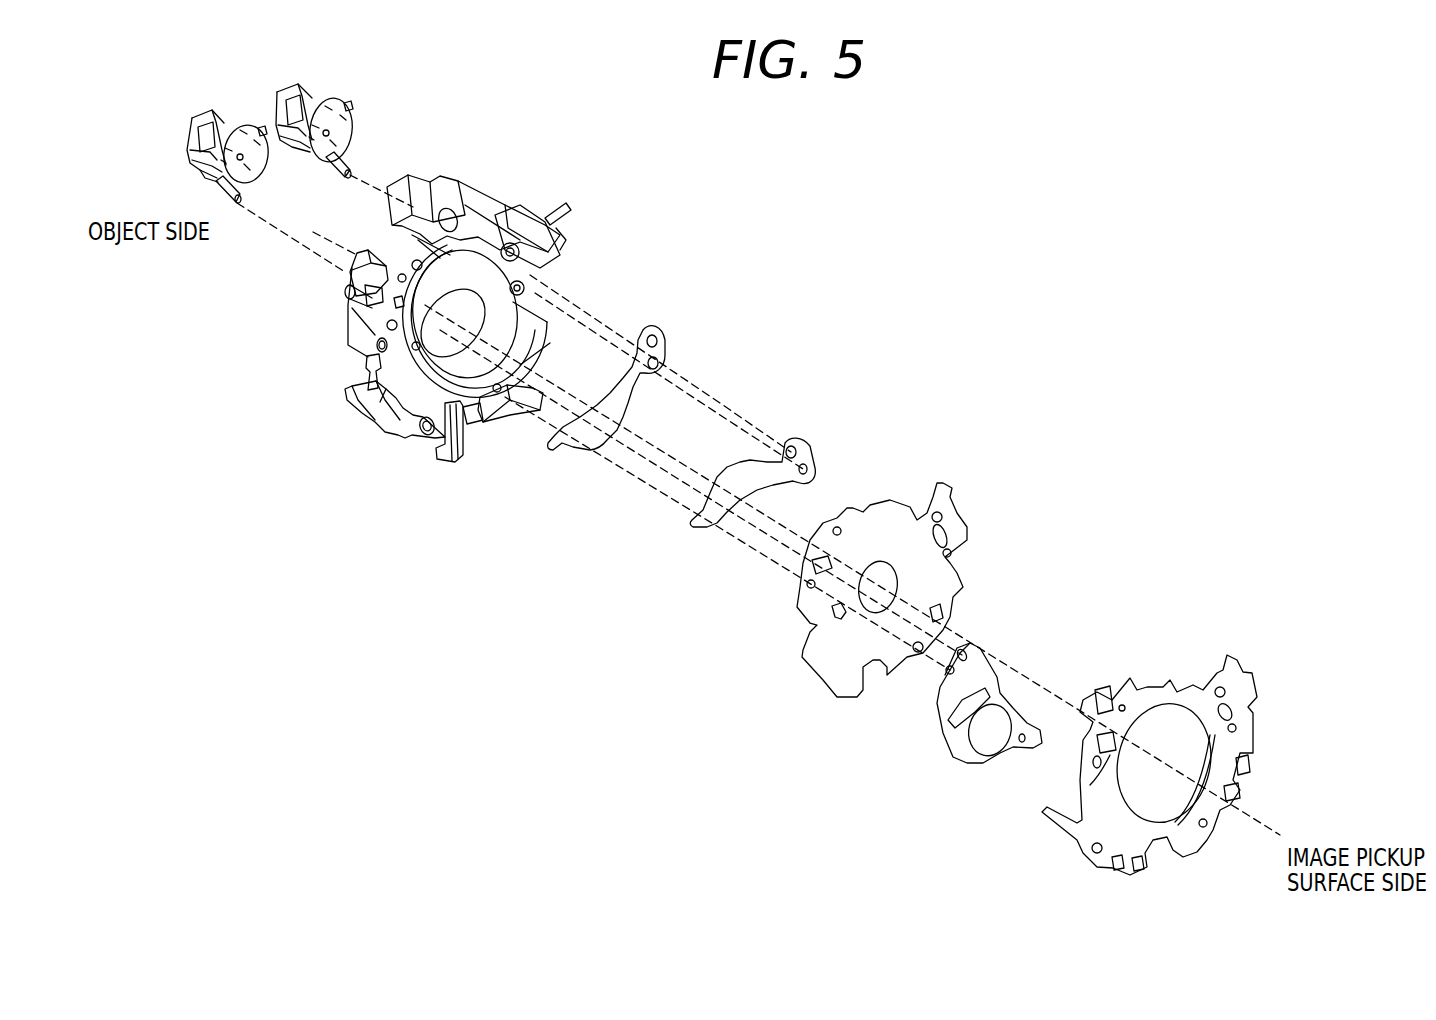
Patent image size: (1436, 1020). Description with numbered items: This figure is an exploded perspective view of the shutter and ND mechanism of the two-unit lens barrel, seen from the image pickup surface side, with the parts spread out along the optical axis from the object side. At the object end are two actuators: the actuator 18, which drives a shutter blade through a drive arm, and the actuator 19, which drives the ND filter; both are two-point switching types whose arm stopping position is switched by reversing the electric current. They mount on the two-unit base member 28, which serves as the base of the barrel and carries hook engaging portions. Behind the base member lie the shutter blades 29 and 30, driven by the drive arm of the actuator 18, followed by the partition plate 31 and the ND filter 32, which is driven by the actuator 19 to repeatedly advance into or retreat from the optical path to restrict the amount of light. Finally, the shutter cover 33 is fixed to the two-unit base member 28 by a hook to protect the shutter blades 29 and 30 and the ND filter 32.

The actuator 18 is at (338, 118).
The actuator 19 is at (190, 138).
The two-unit base member 28 is at (495, 227).
The shutter blade 29 is at (637, 365).
The shutter blade 30 is at (787, 467).
The partition plate 31 is at (925, 530).
The ND filter 32 is at (975, 685).
The shutter cover 33 is at (1238, 692).